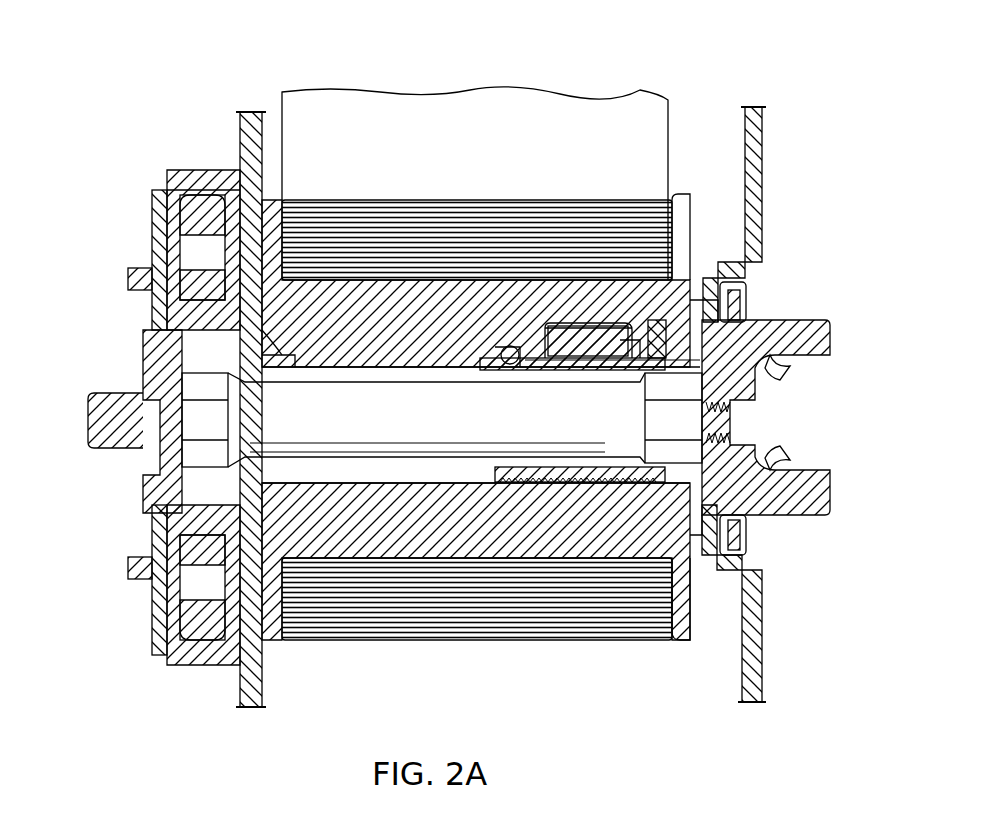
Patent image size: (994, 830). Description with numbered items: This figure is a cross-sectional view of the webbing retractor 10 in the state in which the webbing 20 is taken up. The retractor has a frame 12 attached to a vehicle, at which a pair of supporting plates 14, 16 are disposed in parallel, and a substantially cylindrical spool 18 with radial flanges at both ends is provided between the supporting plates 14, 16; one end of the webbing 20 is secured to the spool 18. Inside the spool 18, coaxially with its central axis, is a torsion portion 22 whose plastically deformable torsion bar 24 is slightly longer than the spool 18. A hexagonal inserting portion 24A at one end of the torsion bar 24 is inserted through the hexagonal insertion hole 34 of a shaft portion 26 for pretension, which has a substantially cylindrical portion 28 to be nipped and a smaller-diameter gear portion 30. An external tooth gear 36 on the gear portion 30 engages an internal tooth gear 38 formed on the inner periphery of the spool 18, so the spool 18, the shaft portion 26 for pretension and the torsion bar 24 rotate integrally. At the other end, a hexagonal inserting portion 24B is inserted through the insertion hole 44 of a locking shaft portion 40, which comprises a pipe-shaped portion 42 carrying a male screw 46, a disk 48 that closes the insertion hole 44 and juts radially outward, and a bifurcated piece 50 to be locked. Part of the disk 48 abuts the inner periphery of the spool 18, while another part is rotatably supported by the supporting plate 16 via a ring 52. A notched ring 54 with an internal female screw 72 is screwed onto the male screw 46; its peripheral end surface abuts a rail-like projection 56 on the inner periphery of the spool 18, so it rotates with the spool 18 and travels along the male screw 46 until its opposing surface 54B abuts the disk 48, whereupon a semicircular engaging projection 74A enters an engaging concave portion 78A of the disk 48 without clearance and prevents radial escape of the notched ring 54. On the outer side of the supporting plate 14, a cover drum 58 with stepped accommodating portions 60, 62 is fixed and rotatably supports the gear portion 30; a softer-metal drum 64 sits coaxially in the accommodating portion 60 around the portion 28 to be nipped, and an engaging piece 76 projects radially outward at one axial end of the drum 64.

The webbing retractor 10 is at (676, 72).
The frame 12 is at (770, 118).
The supporting plate 14 is at (246, 110).
The supporting plate 16 is at (762, 152).
The spool 18 is at (685, 645).
The webbing 20 is at (442, 90).
The torsion portion 22 is at (384, 462).
The torsion bar 24 is at (428, 435).
The inserting portion 24A is at (222, 403).
The inserting portion 24B is at (656, 410).
The shaft portion for pretension 26 is at (94, 392).
The portion to be nipped 28 is at (146, 332).
The gear portion 30 is at (280, 323).
The insertion hole 34 is at (246, 450).
The external tooth gear 36 is at (285, 368).
The internal tooth gear 38 is at (476, 420).
The locking shaft portion 40 is at (834, 326).
The pipe-shaped portion 42 is at (530, 370).
The insertion hole 44 is at (504, 366).
The male screw 46 is at (656, 338).
The disk 48 is at (690, 325).
The piece to be locked 50 is at (832, 350).
The ring 52 is at (732, 300).
The notched ring 54 is at (588, 340).
The opposing surface 54B is at (612, 330).
The rail-like projection 56 is at (452, 565).
The cover drum 58 is at (170, 172).
The accommodating portion 60 is at (208, 275).
The accommodating portion 62 is at (205, 214).
The drum 64 is at (148, 575).
The female screw 72 is at (570, 350).
The engaging projection 74A is at (628, 340).
The engaging piece 76 is at (138, 272).
The engaging concave portion 78A is at (693, 212).